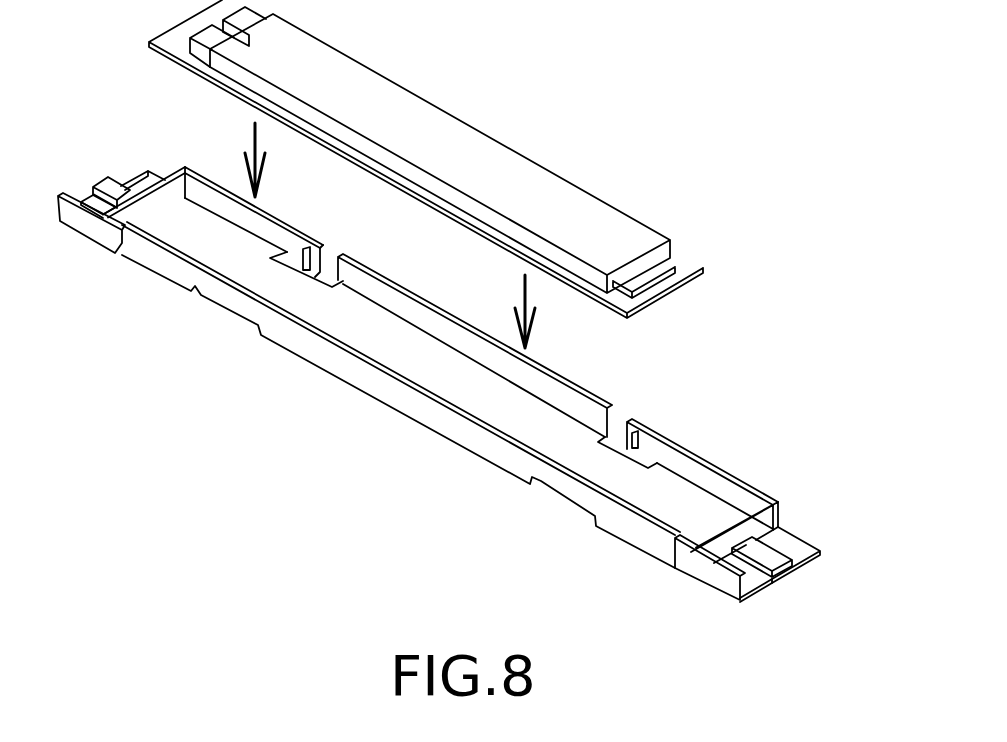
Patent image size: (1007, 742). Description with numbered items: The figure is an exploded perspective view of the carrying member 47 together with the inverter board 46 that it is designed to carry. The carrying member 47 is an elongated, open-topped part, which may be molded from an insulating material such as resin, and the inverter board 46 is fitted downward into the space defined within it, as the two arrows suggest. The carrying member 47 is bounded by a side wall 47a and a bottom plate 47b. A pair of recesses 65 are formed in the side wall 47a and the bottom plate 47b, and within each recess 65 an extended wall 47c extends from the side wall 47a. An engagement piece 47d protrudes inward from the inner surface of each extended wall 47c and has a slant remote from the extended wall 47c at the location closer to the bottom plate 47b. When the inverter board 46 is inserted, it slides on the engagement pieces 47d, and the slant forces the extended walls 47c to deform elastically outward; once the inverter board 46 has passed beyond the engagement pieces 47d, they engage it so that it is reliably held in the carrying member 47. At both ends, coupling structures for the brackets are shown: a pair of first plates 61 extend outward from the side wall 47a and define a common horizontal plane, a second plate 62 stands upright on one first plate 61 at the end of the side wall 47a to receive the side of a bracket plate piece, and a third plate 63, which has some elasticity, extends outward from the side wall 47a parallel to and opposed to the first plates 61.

The inverter board 46 is at (390, 86).
The carrying member 47 is at (392, 397).
The side wall 47a is at (688, 467).
The bottom plate 47b is at (490, 407).
The extended wall 47c is at (293, 247).
The engagement piece 47d is at (338, 260).
The first plate 61 is at (143, 167).
The second plate 62 is at (72, 217).
The third plate 63 is at (103, 177).
The recess 65 is at (335, 258).